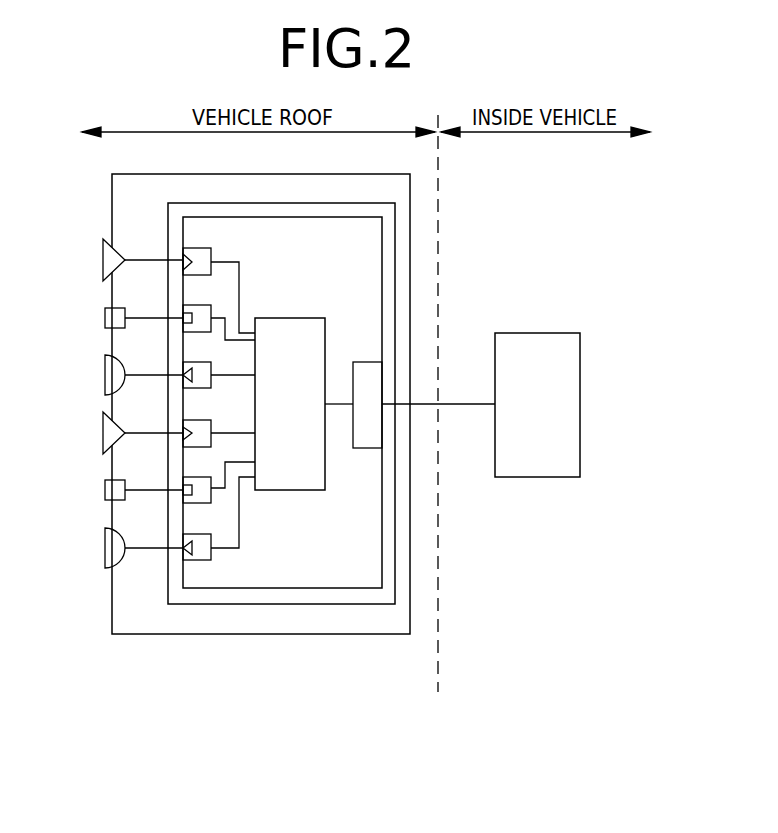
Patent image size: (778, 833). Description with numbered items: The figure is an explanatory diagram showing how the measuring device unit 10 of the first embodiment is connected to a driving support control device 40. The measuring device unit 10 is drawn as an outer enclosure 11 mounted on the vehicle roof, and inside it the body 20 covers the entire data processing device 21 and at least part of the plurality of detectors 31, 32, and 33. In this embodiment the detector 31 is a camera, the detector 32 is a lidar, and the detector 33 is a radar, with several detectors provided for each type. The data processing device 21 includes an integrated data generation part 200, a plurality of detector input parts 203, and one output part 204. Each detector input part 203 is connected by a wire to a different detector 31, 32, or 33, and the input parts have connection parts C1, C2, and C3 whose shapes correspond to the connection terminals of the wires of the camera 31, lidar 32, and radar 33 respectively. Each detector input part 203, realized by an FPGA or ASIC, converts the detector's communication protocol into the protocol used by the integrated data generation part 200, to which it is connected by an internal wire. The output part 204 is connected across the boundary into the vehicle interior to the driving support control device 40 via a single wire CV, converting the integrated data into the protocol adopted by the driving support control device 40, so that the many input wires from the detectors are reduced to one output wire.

The measuring device unit 10 is at (252, 675).
The housing 11 is at (355, 635).
The body 20 is at (290, 203).
The data processing device 21 is at (207, 217).
The camera 31 is at (106, 312).
The lidar 32 is at (106, 256).
The radar 33 is at (107, 374).
The driving support control device 40 is at (580, 413).
The integrated data generation part 200 is at (308, 411).
The detector input part 203 is at (212, 249).
The output part 204 is at (375, 449).
The wire CV is at (448, 407).
The connection part C1 is at (177, 326).
The connection part C2 is at (176, 270).
The connection part C3 is at (177, 384).